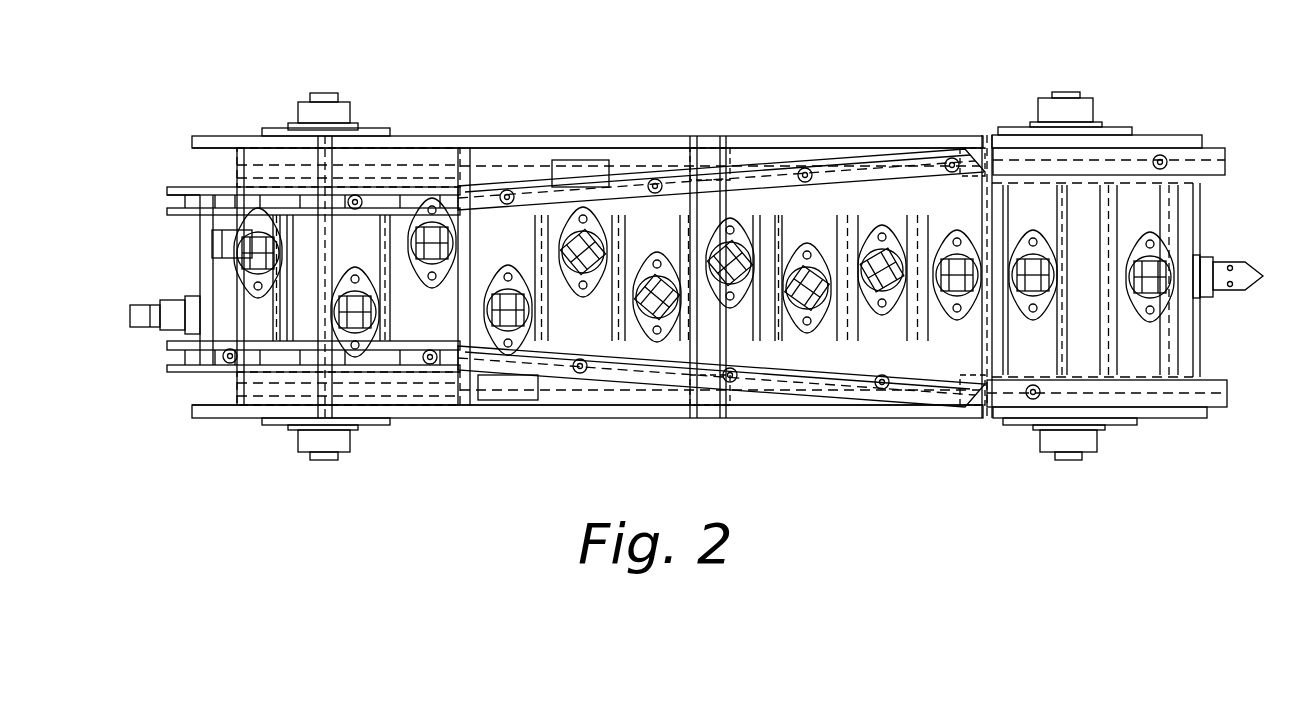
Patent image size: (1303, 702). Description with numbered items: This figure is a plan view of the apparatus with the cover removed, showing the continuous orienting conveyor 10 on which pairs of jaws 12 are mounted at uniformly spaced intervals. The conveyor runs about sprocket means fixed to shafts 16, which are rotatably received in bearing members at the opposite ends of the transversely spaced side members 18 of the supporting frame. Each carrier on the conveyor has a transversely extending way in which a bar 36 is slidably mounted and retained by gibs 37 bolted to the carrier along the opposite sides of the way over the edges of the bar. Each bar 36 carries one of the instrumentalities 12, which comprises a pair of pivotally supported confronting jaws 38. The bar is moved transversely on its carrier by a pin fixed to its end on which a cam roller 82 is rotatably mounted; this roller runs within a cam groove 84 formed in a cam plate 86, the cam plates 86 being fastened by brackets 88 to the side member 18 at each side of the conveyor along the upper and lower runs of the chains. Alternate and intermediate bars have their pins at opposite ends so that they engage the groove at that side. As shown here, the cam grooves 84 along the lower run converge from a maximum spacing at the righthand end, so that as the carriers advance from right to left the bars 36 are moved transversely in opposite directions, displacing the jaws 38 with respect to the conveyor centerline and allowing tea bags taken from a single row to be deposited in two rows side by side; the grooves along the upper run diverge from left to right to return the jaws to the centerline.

The continuous orienting conveyor 10 is at (1198, 198).
The pairs of jaws 12 is at (145, 297).
The shafts 16 is at (1076, 94).
The side members 18 is at (222, 135).
The bar 36 is at (872, 197).
The gibs 37 is at (380, 243).
The confronting jaws 38 is at (958, 232).
The cam roller 82 is at (657, 182).
The cam groove 84 is at (520, 186).
The cam plate 86 is at (748, 192).
The brackets 88 is at (438, 405).